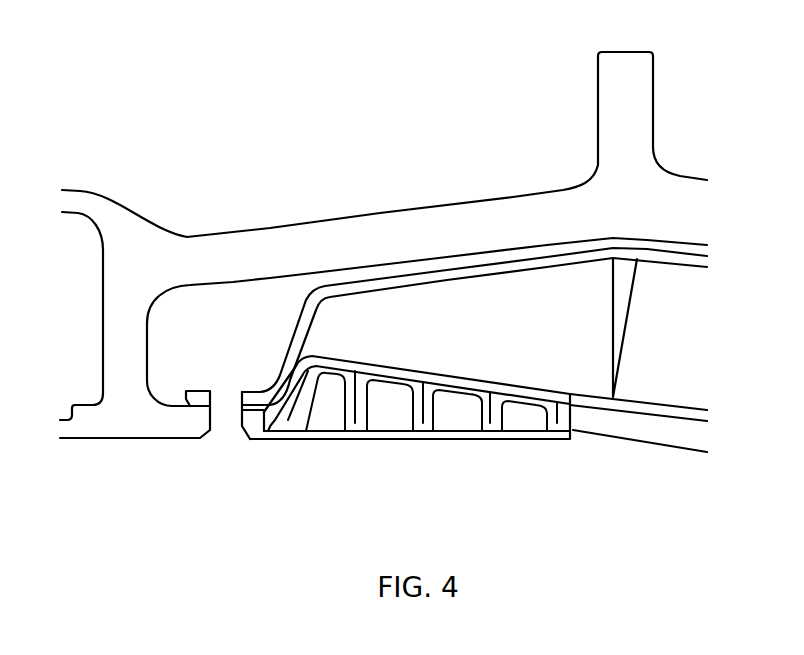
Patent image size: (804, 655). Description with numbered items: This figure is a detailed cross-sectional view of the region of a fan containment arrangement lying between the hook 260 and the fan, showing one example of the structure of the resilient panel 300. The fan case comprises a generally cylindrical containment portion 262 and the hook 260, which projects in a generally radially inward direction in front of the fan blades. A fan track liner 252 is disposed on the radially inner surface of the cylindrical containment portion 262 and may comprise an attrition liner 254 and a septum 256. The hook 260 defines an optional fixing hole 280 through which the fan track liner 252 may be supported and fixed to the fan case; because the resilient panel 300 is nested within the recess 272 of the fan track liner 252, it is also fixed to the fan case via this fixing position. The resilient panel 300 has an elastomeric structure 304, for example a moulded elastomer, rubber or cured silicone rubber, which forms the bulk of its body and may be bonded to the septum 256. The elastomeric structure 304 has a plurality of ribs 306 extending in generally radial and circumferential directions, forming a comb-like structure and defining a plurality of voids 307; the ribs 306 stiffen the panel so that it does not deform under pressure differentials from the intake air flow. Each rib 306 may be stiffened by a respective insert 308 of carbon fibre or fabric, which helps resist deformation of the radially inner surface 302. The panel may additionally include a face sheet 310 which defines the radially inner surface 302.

The fan track liner 252 is at (577, 287).
The attrition liner 254 is at (638, 428).
The septum 256 is at (645, 400).
The hook 260 is at (122, 350).
The cylindrical containment portion 262 is at (388, 225).
The recess 272 is at (473, 371).
The fixing hole 280 is at (240, 415).
The resilient panel 300 is at (258, 456).
The radially inner surface 302 is at (396, 452).
The elastomeric structure 304 is at (332, 373).
The ribs 306 is at (343, 407).
The voids 307 is at (390, 410).
The inserts 308 is at (423, 407).
The face sheet 310 is at (353, 431).